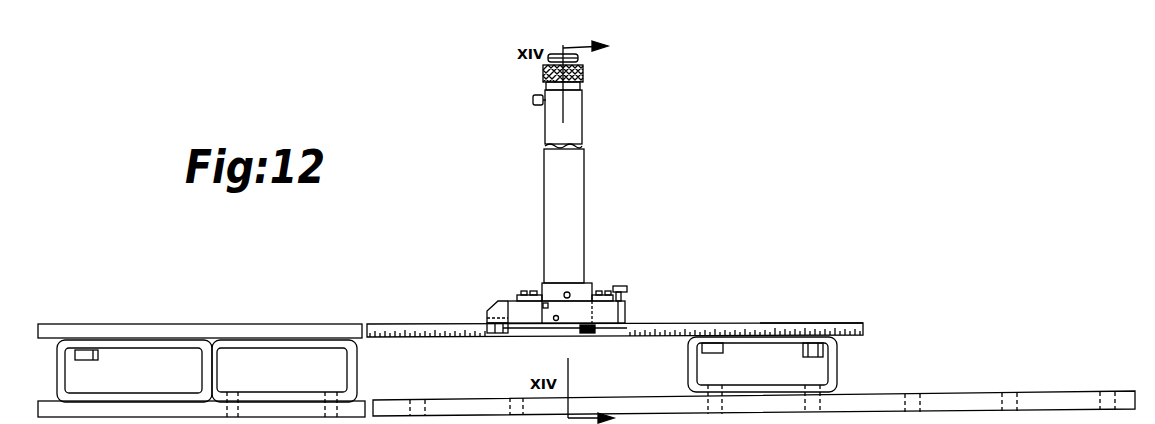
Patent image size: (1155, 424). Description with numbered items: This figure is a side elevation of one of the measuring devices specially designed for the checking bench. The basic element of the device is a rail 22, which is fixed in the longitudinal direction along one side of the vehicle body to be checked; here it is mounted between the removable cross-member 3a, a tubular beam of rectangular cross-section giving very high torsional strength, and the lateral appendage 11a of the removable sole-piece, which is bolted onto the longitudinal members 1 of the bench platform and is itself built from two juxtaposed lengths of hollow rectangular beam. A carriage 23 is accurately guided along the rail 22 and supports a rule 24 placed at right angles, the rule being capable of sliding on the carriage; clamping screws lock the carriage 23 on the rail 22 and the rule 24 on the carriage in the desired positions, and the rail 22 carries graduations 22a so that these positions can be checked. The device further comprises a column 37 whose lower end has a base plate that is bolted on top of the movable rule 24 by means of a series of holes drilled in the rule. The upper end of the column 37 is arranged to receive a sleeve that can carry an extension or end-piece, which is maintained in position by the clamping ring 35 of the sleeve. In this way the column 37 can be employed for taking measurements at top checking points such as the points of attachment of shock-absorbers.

The longitudinal member 1 is at (1043, 398).
The removable cross-member 3a is at (838, 362).
The appendage 11a is at (252, 345).
The rail 22 is at (387, 325).
The graduations 22a is at (846, 322).
The carriage 23 is at (615, 312).
The rule 24 is at (553, 299).
The clamping ring 35 is at (583, 74).
The column 37 is at (572, 187).